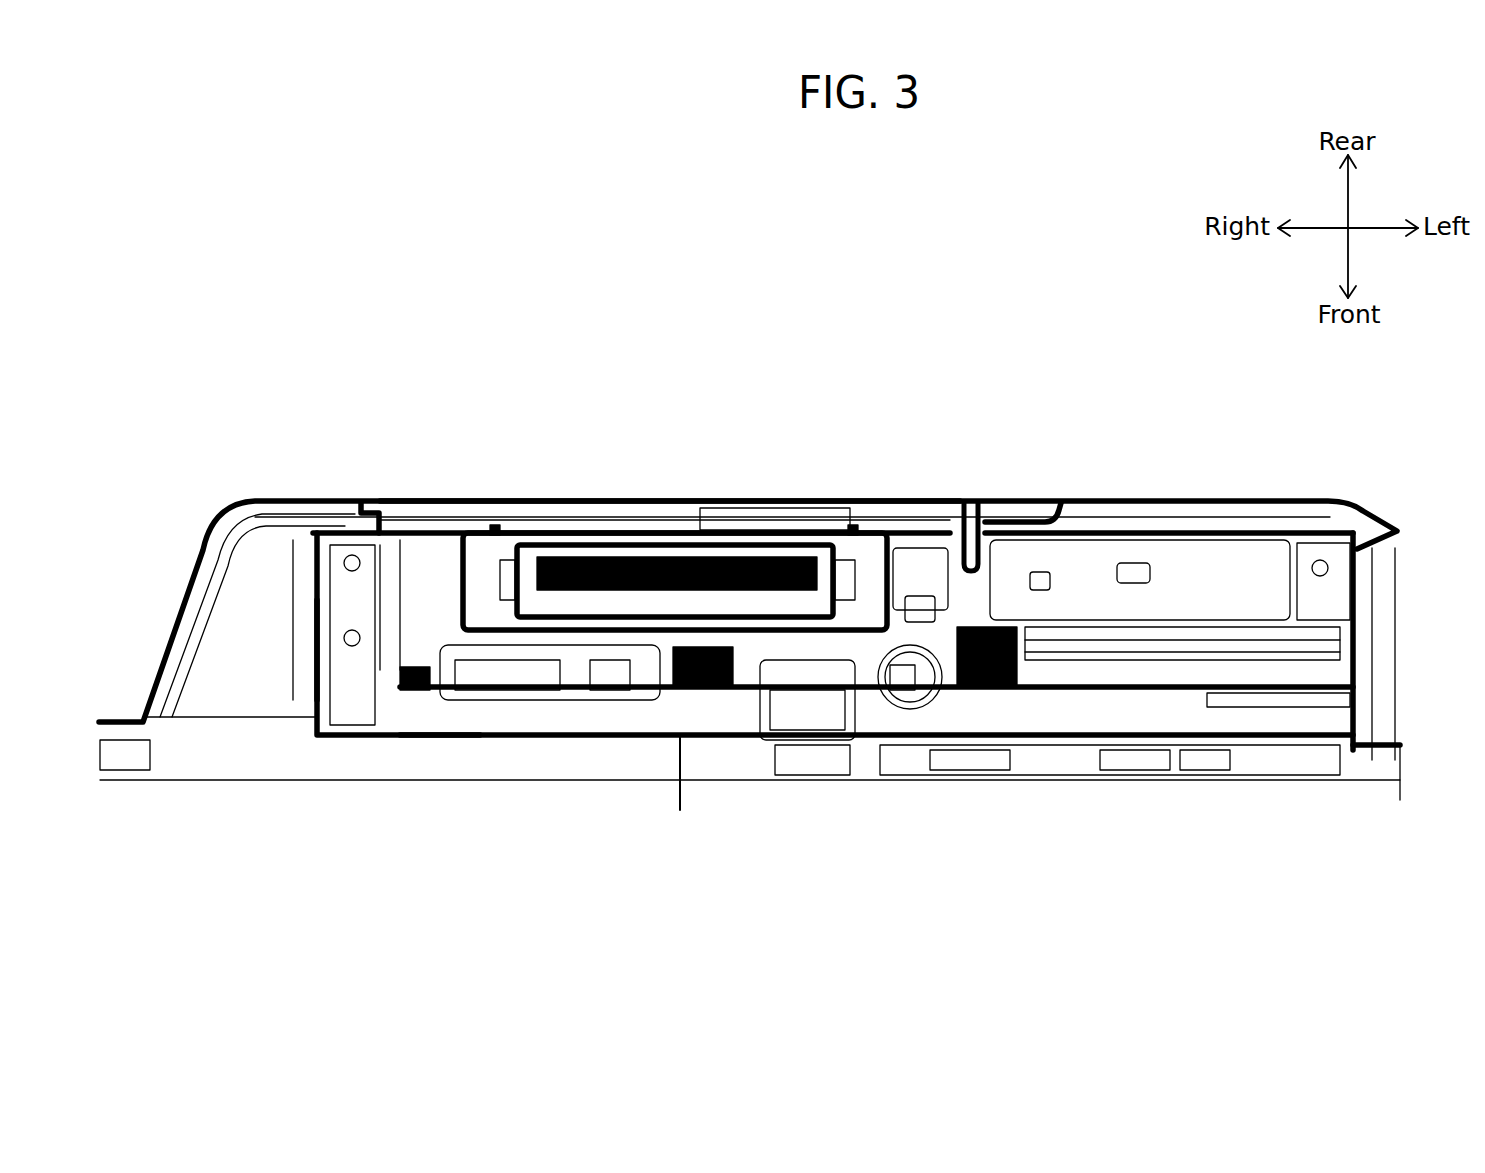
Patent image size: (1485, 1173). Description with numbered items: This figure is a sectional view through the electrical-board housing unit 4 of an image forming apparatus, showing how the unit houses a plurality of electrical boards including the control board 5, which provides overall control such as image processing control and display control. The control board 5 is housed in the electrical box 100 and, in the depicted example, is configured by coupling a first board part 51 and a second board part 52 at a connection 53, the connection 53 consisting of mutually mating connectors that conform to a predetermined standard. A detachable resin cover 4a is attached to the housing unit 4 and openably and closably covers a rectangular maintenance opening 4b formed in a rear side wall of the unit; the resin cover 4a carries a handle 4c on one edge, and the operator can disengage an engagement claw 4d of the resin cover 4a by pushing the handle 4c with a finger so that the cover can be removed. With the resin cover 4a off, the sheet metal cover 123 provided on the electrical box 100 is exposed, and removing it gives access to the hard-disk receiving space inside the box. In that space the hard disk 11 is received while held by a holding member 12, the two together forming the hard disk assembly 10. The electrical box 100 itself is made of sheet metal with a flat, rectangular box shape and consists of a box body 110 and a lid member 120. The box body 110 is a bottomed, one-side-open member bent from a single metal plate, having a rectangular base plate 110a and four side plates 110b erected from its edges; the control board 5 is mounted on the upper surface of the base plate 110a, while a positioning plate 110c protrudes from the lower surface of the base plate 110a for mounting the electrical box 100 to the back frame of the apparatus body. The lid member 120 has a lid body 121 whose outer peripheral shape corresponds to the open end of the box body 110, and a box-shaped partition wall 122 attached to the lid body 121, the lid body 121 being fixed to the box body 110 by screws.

The electrical-board housing unit 4 is at (215, 490).
The resin cover 4a is at (680, 500).
The maintenance opening 4b is at (373, 500).
The handle 4c is at (988, 507).
The engagement claw 4d is at (985, 544).
The control board 5 is at (876, 807).
The first board part 51 is at (585, 690).
The second board part 52 is at (857, 736).
The connection 53 is at (670, 690).
The hard disk assembly 10 is at (675, 477).
The hard disk 11 is at (612, 556).
The holding member 12 is at (518, 545).
The electrical box 100 is at (353, 324).
The box body 110 is at (312, 612).
The base plate 110a is at (437, 735).
The side plates 110b is at (313, 672).
The positioning plate 110c is at (682, 757).
The lid member 120 is at (418, 520).
The lid body 121 is at (1098, 532).
The partition wall 122 is at (897, 590).
The sheet metal cover 123 is at (767, 530).